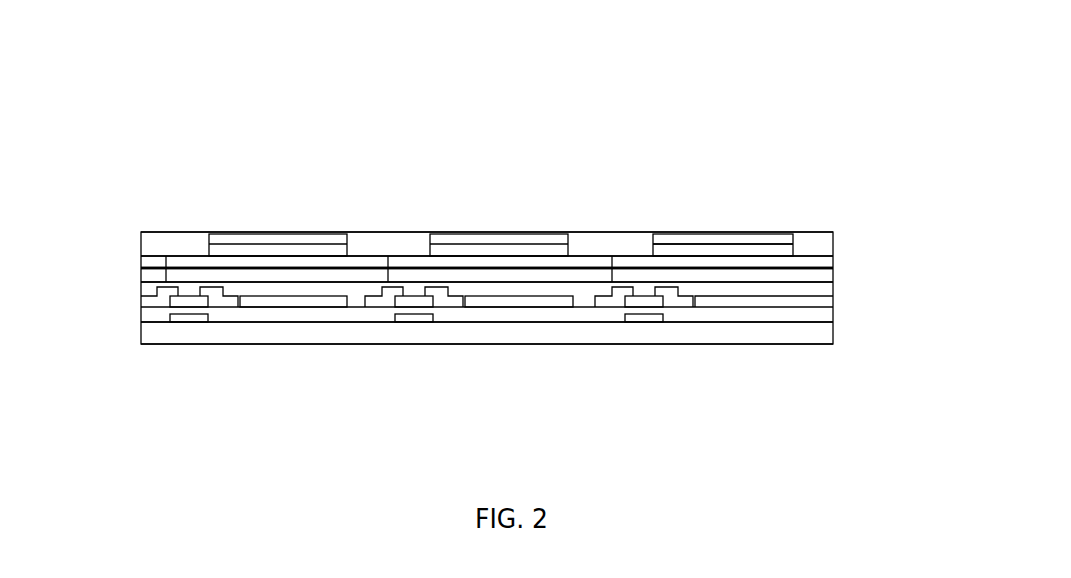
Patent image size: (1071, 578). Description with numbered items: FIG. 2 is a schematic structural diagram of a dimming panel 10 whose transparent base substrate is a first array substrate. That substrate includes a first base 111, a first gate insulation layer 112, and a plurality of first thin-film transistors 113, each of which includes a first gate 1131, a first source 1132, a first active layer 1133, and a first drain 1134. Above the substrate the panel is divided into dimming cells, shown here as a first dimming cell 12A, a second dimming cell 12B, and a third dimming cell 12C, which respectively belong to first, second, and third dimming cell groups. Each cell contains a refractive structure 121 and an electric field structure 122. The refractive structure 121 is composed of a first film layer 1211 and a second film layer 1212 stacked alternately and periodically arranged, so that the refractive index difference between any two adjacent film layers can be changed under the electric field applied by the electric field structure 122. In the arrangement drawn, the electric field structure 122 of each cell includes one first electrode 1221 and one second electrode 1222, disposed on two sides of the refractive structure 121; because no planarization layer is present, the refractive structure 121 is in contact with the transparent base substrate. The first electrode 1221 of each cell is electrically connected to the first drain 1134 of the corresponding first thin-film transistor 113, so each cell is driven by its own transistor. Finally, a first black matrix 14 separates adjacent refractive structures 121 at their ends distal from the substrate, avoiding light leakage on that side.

The dimming panel 10 is at (482, 54).
The first black matrix 14 is at (141, 232).
The first base 111 is at (145, 333).
The first gate insulation layer 112 is at (145, 314).
The first thin-film transistor 113 is at (379, 365).
The first gate 1131 is at (384, 368).
The first source 1132 is at (369, 332).
The first active layer 1133 is at (384, 349).
The first drain 1134 is at (108, 363).
The first dimming cell 12A is at (347, 232).
The second dimming cell 12B is at (568, 232).
The third dimming cell 12C is at (561, 202).
The refractive structure 121 is at (541, 193).
The first film layer 1211 is at (893, 160).
The second film layer 1212 is at (517, 193).
The electric field structure 122 is at (796, 268).
The first electrode 1221 is at (797, 301).
The second electrode 1222 is at (790, 238).